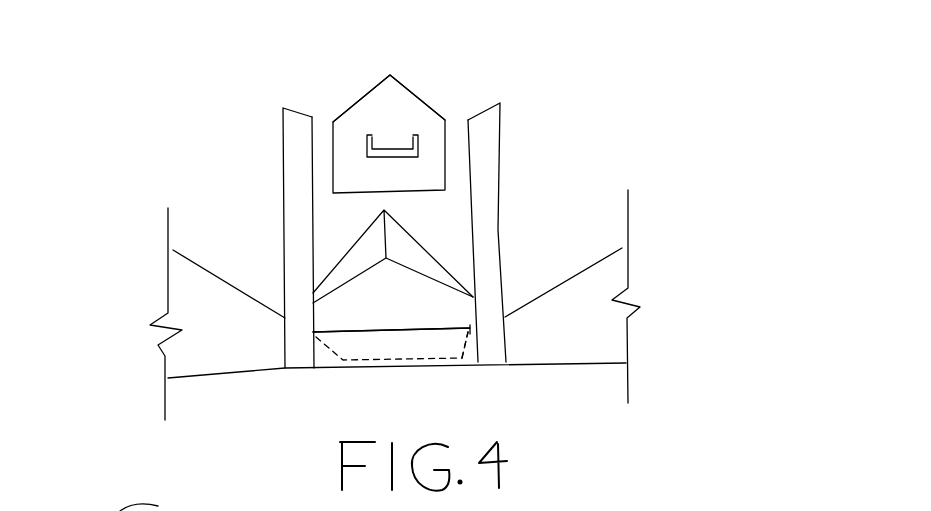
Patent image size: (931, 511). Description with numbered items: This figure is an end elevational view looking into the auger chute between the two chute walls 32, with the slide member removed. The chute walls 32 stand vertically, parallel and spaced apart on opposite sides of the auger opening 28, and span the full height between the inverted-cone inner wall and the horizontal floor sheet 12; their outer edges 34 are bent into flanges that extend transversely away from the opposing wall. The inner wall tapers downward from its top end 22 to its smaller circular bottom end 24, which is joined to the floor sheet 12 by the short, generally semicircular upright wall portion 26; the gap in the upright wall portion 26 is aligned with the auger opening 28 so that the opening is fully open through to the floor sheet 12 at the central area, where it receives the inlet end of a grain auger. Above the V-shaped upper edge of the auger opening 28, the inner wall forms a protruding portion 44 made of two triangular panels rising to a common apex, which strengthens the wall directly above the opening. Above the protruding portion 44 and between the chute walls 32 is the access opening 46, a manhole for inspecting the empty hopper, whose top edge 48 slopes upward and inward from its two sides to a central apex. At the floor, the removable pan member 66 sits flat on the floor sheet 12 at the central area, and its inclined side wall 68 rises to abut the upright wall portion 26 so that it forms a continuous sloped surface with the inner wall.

The floor sheet 12 is at (575, 365).
The first layer 22 is at (447, 323).
The bottom end 24 is at (473, 308).
The upright wall portion 26 is at (313, 345).
The auger opening 28 is at (367, 297).
The chute walls 32 is at (311, 197).
The outer edges 34 is at (283, 138).
The protruding portion 44 is at (350, 231).
The access opening 46 is at (430, 137).
The top edge 48 is at (407, 83).
The pan member 66 is at (390, 362).
The side wall 68 is at (462, 352).